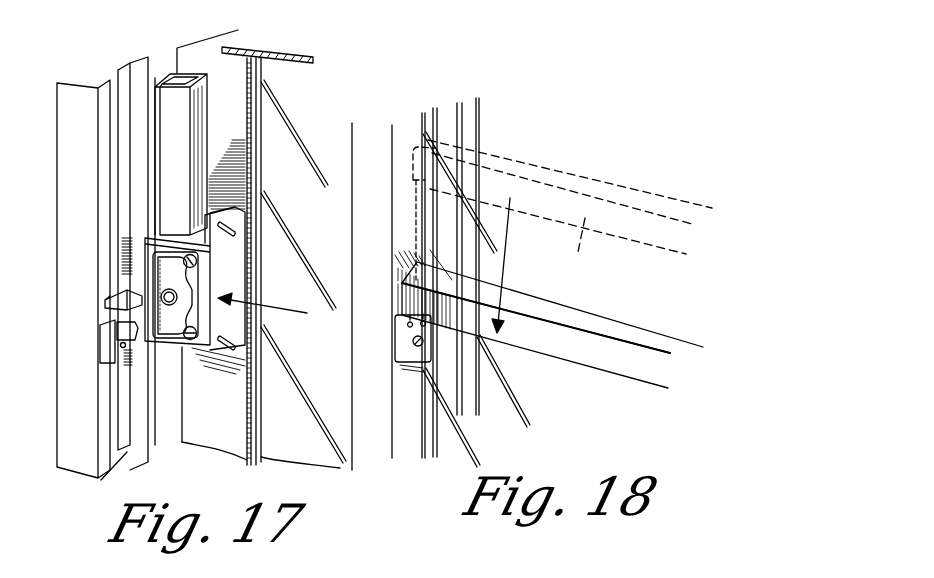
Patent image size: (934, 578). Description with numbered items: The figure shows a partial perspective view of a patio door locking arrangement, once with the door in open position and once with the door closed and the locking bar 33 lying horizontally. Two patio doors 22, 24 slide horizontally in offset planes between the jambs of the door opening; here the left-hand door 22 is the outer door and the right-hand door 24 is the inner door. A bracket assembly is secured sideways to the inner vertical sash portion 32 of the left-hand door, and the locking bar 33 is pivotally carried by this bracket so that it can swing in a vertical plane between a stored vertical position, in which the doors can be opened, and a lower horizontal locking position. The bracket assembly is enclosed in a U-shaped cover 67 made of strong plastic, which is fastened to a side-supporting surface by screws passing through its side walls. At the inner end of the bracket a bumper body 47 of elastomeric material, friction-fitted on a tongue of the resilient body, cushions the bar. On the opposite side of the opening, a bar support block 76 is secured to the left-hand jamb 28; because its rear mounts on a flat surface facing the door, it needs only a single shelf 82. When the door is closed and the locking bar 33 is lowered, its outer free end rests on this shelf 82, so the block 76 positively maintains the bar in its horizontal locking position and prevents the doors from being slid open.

In FIG. 18, the left-hand door 22 is at (478, 109).
In FIG. 17, the right-hand door 24 is at (310, 47).
In FIG. 17, the jamb 28 is at (72, 163).
In FIG. 18, the jamb 28 is at (405, 160).
In FIG. 17, the inner vertical sash member 32 is at (224, 65).
In FIG. 17, the locking bar 33 is at (165, 93).
In FIG. 18, the locking bar 33 is at (550, 327).
In FIG. 17, the bumper body 47 is at (155, 447).
In FIG. 17, the cover 67 is at (172, 343).
In FIG. 17, the bar support block 76 is at (100, 333).
In FIG. 18, the bar support block 76 is at (395, 335).
In FIG. 17, the shelf 82 is at (106, 297).